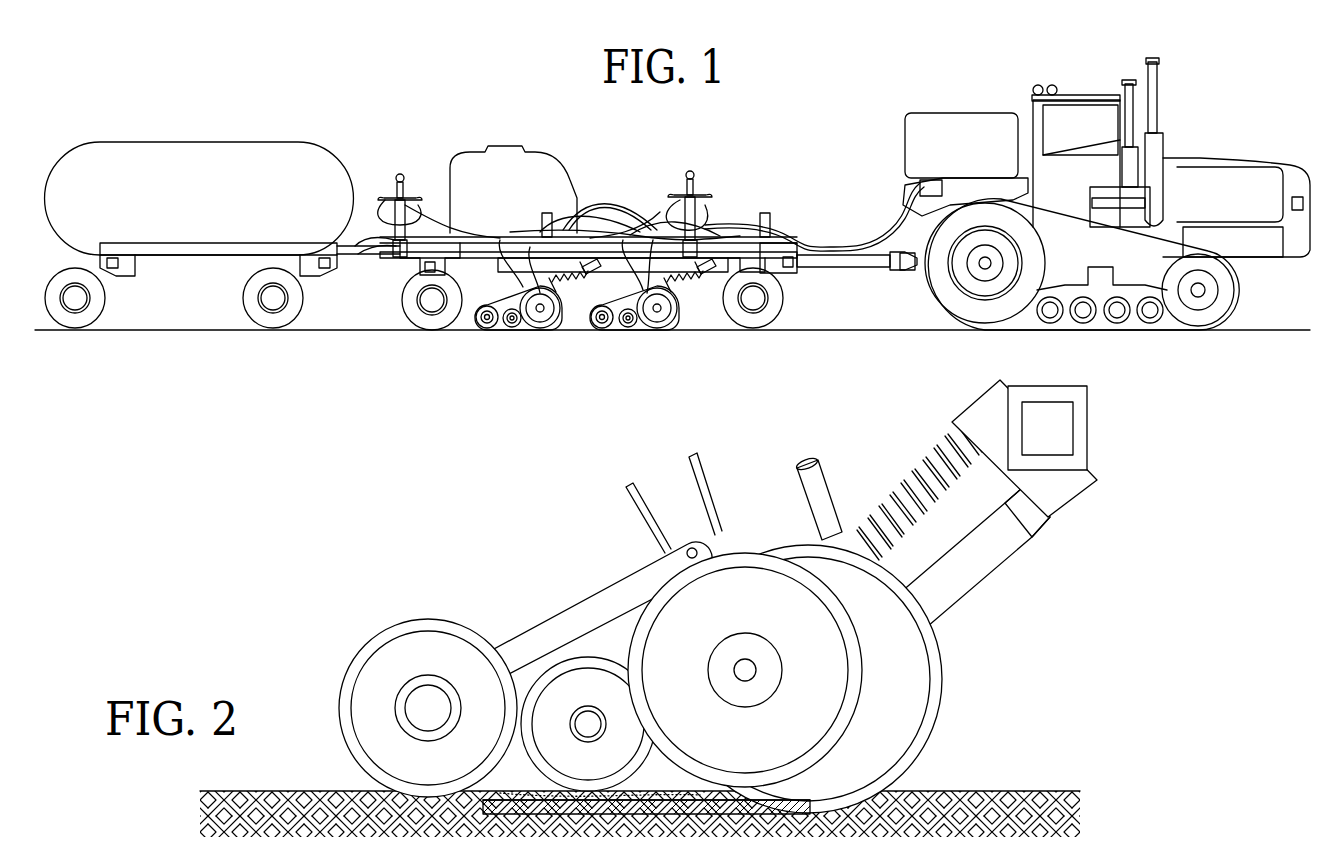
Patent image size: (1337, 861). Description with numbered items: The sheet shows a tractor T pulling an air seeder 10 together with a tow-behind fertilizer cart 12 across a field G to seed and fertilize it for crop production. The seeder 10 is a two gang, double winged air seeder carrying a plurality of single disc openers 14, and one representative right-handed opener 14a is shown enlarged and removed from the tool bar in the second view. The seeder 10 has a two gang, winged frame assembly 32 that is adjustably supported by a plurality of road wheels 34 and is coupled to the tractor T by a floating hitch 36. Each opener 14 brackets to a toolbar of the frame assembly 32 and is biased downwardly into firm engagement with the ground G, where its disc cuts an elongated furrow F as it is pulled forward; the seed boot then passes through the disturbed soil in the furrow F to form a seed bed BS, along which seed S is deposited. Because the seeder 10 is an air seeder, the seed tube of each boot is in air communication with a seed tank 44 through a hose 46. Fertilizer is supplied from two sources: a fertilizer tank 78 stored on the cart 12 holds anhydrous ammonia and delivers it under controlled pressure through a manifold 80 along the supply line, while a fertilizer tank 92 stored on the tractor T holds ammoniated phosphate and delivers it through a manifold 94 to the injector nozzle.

In FIG. 1, the air seeder 10 is at (760, 207).
In FIG. 1, the tow-behind fertilizer cart 12 is at (183, 294).
In FIG. 1, the single disc openers 14 is at (562, 343).
In FIG. 2, the right disc opener 14a is at (500, 574).
In FIG. 1, the frame assembly 32 is at (708, 268).
In FIG. 1, the road wheels 34 is at (762, 306).
In FIG. 1, the floating hitch 36 is at (823, 259).
In FIG. 1, the seed tank 44 is at (556, 178).
In FIG. 1, the hose 46 is at (623, 203).
In FIG. 1, the fertilizer tank 78 is at (241, 152).
In FIG. 1, the manifold 80 is at (410, 177).
In FIG. 1, the fertilizer tank 92 is at (948, 111).
In FIG. 1, the manifold 94 is at (703, 186).
In FIG. 1, the tractor T is at (1071, 110).
In FIG. 1, the field G is at (829, 322).
In FIG. 2, the field G is at (976, 795).
In FIG. 1, the furrow F is at (652, 343).
In FIG. 2, the furrow F is at (653, 794).
In FIG. 2, the seed bed BS is at (508, 794).
In FIG. 2, the seed S is at (688, 788).